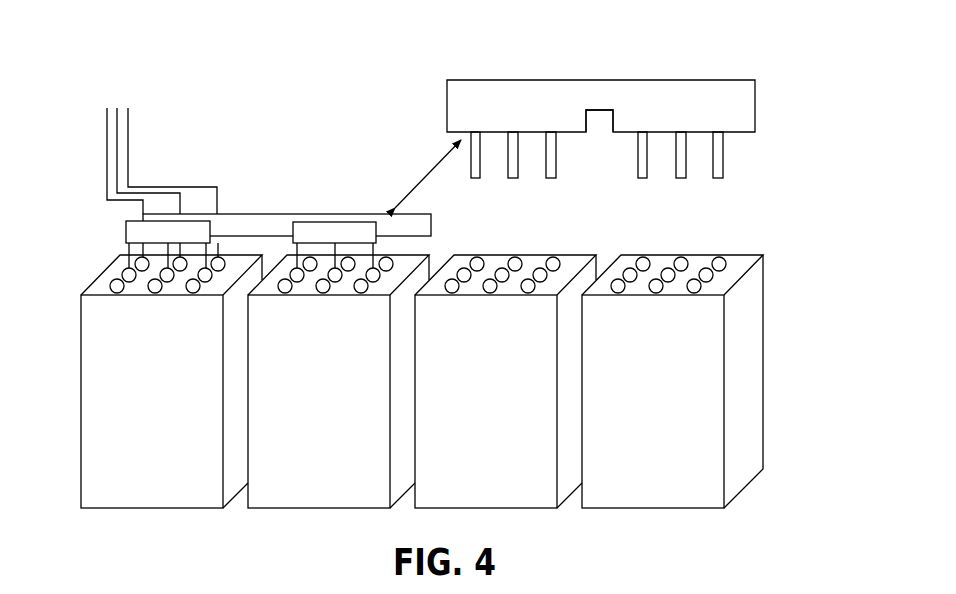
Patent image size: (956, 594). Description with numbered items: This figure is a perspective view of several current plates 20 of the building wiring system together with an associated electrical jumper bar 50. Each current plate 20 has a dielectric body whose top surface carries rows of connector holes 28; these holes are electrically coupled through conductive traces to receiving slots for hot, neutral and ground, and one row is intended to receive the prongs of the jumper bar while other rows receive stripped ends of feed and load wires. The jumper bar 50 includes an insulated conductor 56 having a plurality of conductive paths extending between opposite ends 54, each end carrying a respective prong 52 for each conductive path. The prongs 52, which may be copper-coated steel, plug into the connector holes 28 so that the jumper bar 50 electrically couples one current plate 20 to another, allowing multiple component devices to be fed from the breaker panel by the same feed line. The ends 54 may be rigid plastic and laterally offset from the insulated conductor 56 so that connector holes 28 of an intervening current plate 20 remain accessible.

The current plate 20 is at (139, 410).
The connector holes 28 is at (105, 259).
The electrical jumper bar 50 is at (270, 213).
The prong 52 is at (724, 160).
The opposite ends 54 is at (483, 80).
The insulated conductor 56 is at (600, 96).